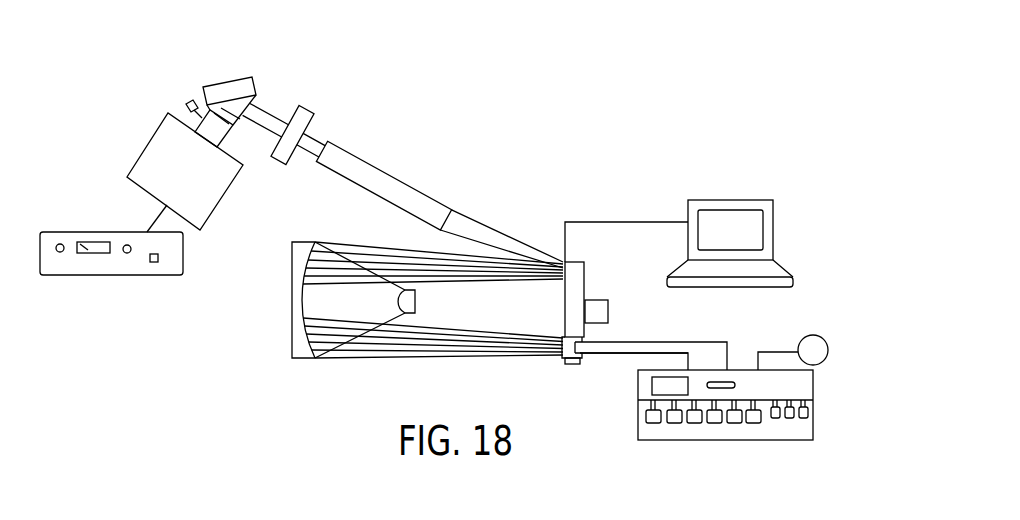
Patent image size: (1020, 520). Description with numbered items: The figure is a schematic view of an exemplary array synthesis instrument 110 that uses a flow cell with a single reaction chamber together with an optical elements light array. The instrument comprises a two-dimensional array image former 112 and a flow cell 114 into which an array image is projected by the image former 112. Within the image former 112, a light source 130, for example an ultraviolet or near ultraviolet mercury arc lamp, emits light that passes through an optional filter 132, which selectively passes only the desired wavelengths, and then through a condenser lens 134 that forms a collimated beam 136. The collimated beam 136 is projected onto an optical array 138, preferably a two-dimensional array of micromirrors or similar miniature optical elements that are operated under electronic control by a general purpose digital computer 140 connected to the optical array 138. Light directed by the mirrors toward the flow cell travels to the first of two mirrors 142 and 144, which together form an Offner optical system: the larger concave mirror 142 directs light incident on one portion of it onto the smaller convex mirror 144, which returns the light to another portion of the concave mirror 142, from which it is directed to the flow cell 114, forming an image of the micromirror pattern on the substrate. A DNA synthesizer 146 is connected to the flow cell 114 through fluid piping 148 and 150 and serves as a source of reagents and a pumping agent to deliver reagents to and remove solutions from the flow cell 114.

The array synthesis instrument 110 is at (350, 416).
The two-dimensional array image former 112 is at (231, 325).
The flow cell 114 is at (571, 364).
The light source 130 is at (150, 140).
The filter 132 is at (228, 83).
The condenser lens 134 is at (387, 182).
The collimated beam 136 is at (480, 232).
The optical array 138 is at (564, 261).
The digital computer 140 is at (773, 226).
The concave mirror 142 is at (298, 345).
The convex mirror 144 is at (416, 298).
The DNA synthesizer 146 is at (814, 384).
The fluid piping 148 is at (614, 355).
The fluid piping 150 is at (656, 342).